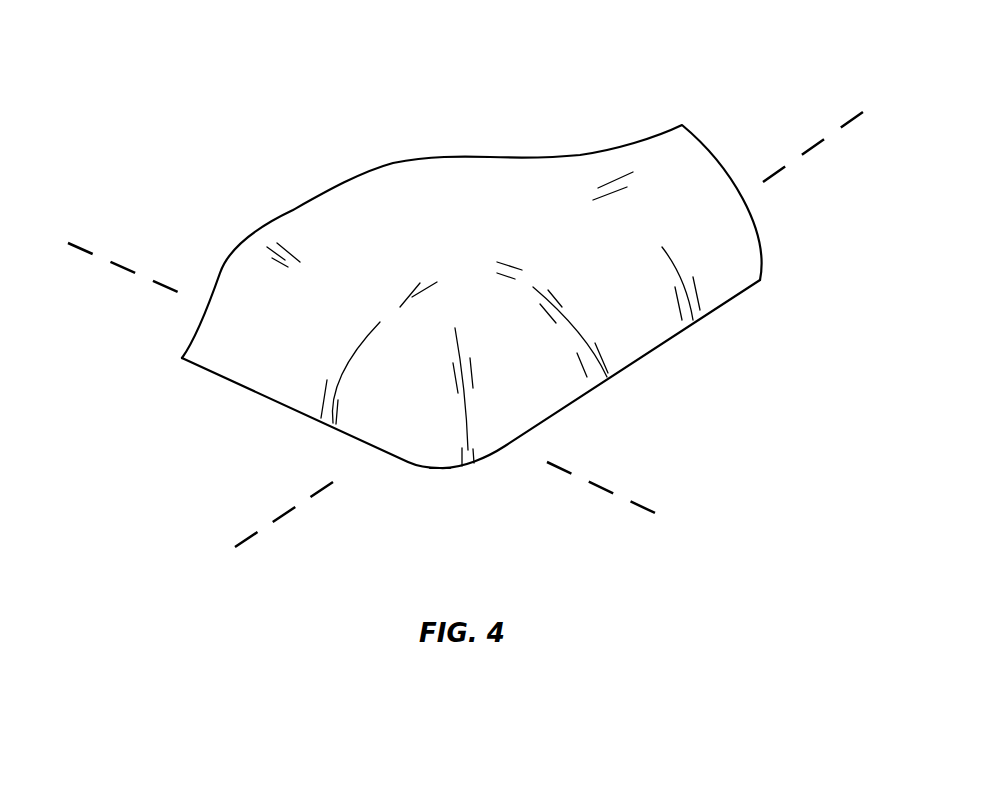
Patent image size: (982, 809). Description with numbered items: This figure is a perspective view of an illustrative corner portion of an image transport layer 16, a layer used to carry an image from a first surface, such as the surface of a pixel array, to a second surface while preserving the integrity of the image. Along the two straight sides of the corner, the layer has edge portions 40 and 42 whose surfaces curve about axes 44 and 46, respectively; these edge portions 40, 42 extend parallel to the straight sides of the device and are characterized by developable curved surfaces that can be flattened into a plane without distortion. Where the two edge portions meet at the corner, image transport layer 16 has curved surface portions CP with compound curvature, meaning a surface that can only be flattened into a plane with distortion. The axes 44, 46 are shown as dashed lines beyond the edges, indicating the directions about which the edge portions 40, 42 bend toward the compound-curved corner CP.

The image transport layer 16 is at (568, 75).
The edge portion 40 is at (166, 386).
The edge portion 42 is at (772, 289).
The axis 44 is at (83, 252).
The axis 46 is at (852, 122).
The curved surface portion CP is at (423, 426).